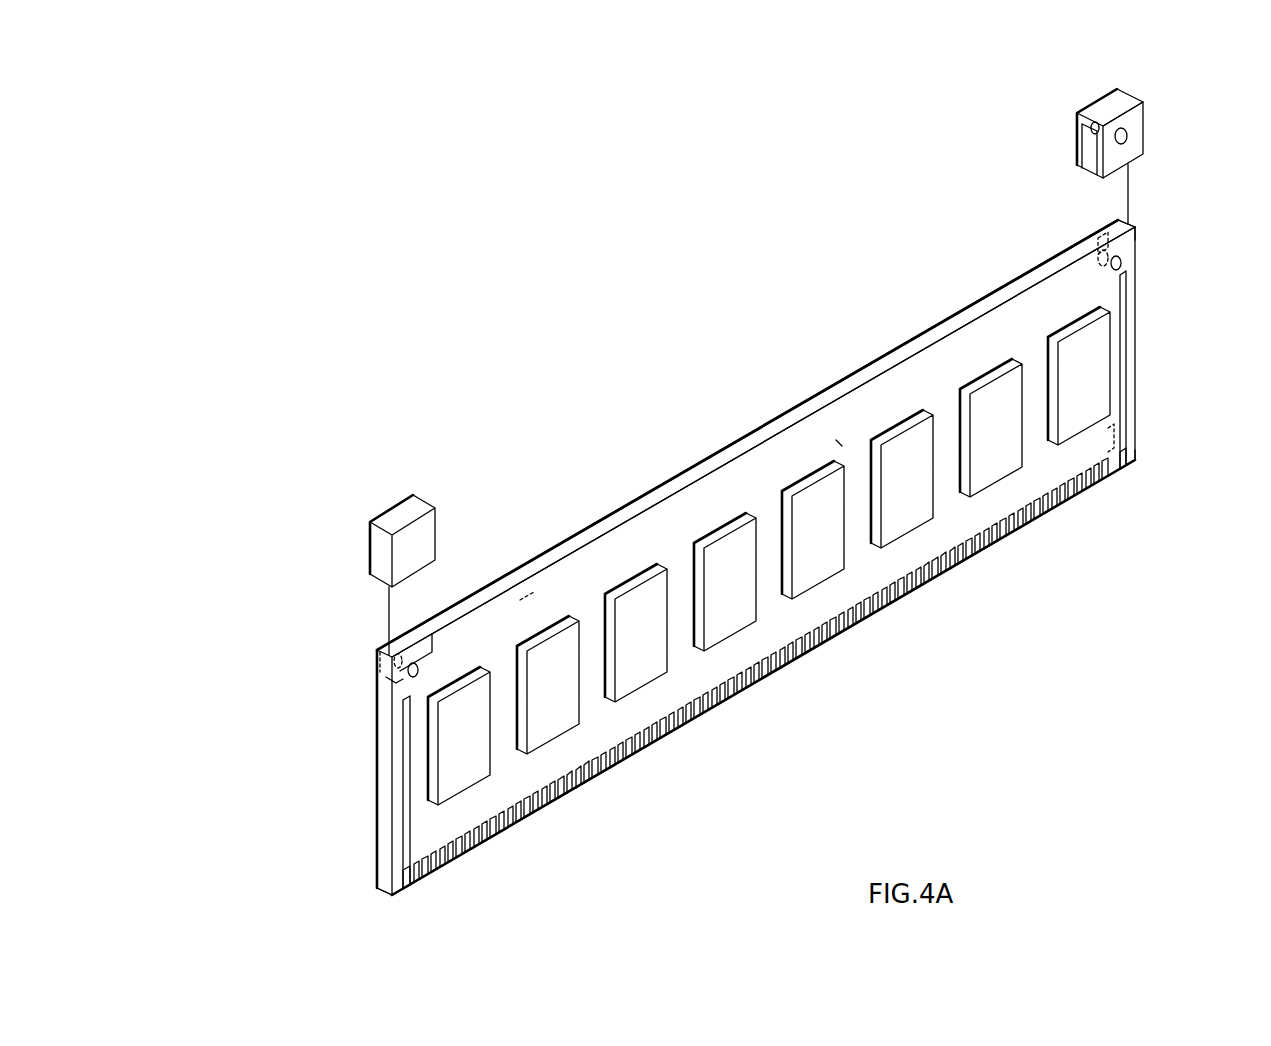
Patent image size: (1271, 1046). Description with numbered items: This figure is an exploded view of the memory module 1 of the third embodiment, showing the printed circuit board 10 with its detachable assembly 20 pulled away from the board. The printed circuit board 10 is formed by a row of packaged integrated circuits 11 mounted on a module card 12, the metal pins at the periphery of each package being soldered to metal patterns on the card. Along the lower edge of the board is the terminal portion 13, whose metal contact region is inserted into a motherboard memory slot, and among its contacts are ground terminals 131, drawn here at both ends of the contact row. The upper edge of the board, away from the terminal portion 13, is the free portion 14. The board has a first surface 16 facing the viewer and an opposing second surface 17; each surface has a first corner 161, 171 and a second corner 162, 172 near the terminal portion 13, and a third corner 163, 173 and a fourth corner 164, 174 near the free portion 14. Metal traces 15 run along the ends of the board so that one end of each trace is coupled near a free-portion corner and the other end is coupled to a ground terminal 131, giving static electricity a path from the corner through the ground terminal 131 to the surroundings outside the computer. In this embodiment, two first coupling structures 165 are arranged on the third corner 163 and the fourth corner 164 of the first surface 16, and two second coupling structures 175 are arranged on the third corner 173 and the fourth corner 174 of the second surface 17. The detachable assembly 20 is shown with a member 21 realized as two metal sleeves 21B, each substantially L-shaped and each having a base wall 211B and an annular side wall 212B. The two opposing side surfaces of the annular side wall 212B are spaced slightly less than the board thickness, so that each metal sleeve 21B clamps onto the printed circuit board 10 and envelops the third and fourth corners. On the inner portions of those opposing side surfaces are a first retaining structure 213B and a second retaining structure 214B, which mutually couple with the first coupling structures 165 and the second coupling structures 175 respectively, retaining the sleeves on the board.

The memory module 1 is at (665, 477).
The printed circuit board 10 is at (788, 366).
The packaged integrated circuits 11 is at (807, 482).
The module card 12 is at (838, 443).
The terminal portion 13 is at (812, 664).
The ground terminals 131 is at (412, 882).
The free portion 14 is at (868, 358).
The metal traces 15 is at (402, 783).
The first surface 16 is at (600, 560).
The second surface 17 is at (527, 597).
The first corner 161 is at (402, 891).
The second corner 162 is at (1140, 462).
The third corner 163 is at (390, 682).
The fourth corner 164 is at (1140, 240).
The first coupling structures 165 is at (420, 668).
The first corner 171 is at (375, 876).
The second corner 172 is at (1112, 450).
The third corner 173 is at (378, 655).
The fourth corner 174 is at (1103, 236).
The second coupling structures 175 is at (398, 656).
The detachable assembly 20 is at (221, 462).
The fixing member 21 is at (271, 462).
The metal sleeve 21B is at (375, 510).
The base wall 211B is at (1115, 103).
The annular side wall 212B is at (1137, 130).
The first retaining structure 213B is at (1126, 146).
The second retaining structure 214B is at (1091, 131).